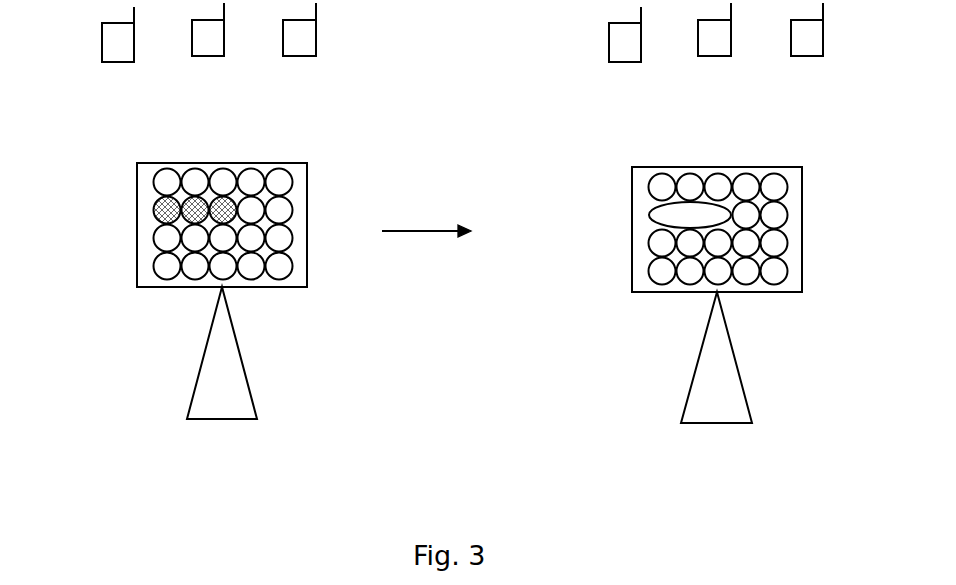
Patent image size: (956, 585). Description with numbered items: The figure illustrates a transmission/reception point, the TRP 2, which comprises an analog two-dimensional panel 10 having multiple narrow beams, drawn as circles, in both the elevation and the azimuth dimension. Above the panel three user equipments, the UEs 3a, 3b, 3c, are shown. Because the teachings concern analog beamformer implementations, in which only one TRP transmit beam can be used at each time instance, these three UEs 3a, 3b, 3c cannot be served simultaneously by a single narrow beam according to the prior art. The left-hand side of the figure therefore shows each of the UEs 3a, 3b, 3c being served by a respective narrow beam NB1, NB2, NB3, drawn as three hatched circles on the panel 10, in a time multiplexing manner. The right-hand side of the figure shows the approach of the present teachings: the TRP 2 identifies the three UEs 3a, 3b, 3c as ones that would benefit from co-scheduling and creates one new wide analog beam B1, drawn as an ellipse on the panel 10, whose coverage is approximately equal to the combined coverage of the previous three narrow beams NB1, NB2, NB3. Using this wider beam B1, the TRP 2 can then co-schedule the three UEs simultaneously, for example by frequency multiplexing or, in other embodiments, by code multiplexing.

The TRP 2 is at (156, 357).
The UE 3a is at (113, 43).
The UE 3b is at (203, 40).
The UE 3c is at (295, 40).
The analog two-dimensional panel 10 is at (297, 227).
The narrow beam NB1 is at (156, 217).
The narrow beam NB2 is at (195, 213).
The narrow beam NB3 is at (222, 212).
The wide analog beam B1 is at (667, 214).